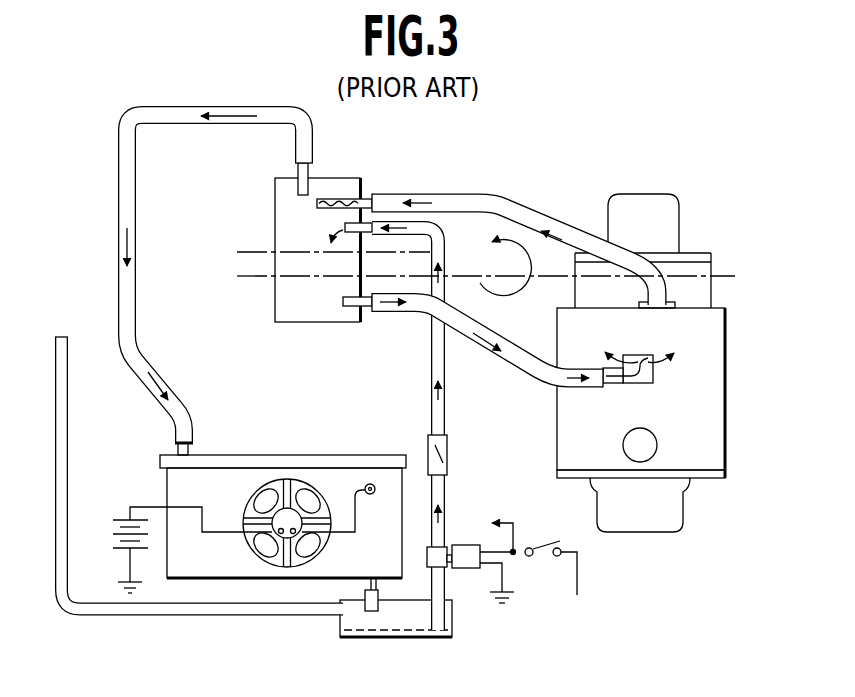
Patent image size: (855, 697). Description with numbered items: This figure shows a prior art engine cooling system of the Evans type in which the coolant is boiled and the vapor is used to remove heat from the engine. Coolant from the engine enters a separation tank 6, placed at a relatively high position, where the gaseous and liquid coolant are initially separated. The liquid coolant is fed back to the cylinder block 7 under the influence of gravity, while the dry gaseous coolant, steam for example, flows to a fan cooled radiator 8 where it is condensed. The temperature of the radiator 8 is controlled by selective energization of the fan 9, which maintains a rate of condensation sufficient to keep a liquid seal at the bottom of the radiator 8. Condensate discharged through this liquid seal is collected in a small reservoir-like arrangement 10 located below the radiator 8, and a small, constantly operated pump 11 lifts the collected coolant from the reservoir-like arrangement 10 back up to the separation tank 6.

The separation tank 6 is at (275, 202).
The cylinder block 7 is at (690, 263).
The radiator 8 is at (177, 487).
The fan 9 is at (265, 547).
The reservoir-like arrangement 10 is at (362, 638).
The pump 11 is at (470, 570).